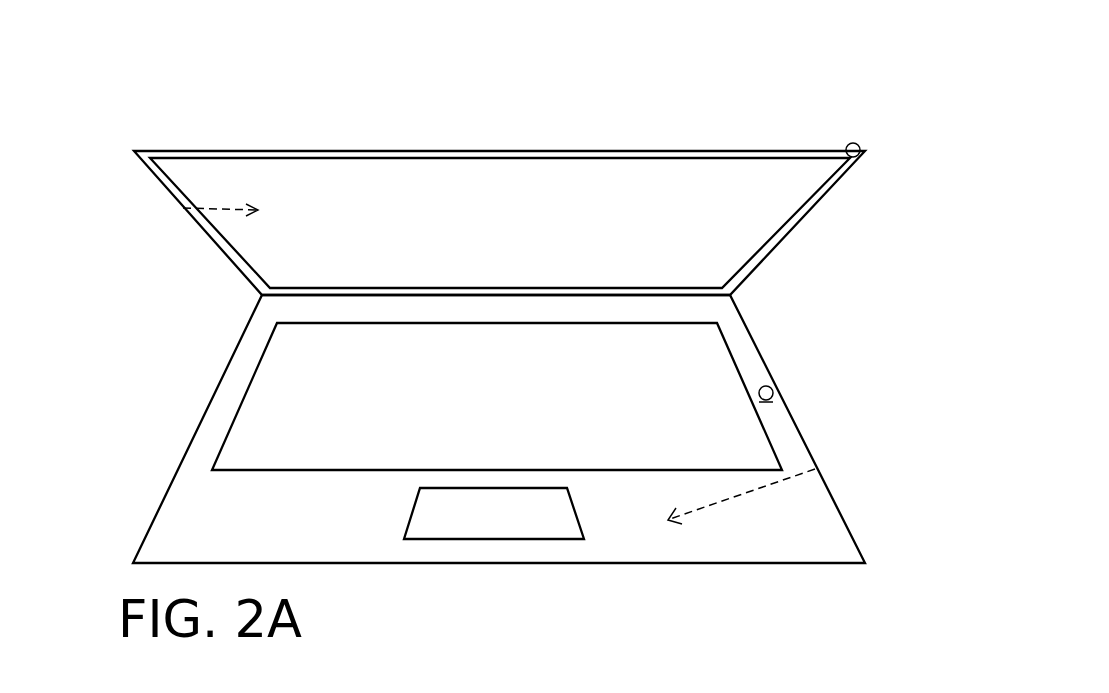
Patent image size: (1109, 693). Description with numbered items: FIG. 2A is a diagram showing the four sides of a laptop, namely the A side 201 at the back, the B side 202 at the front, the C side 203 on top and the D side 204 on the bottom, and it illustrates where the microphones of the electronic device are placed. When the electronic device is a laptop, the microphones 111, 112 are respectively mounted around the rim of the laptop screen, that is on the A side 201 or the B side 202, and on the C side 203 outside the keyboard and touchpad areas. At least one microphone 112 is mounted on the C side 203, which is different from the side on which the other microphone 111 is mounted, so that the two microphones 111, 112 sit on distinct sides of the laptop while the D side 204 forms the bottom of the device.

The microphone 111 is at (866, 120).
The microphone 112 is at (769, 386).
The A side 201 is at (183, 208).
The B side 202 is at (675, 208).
The C side 203 is at (250, 523).
The D side 204 is at (817, 468).